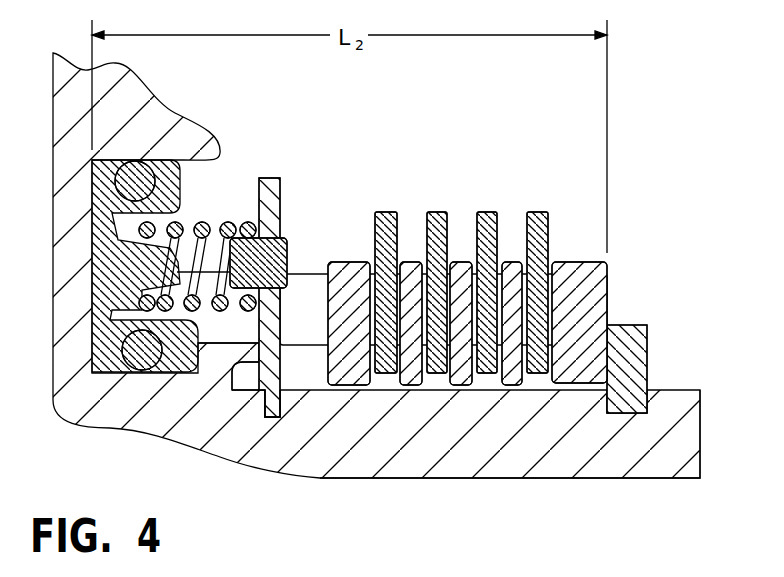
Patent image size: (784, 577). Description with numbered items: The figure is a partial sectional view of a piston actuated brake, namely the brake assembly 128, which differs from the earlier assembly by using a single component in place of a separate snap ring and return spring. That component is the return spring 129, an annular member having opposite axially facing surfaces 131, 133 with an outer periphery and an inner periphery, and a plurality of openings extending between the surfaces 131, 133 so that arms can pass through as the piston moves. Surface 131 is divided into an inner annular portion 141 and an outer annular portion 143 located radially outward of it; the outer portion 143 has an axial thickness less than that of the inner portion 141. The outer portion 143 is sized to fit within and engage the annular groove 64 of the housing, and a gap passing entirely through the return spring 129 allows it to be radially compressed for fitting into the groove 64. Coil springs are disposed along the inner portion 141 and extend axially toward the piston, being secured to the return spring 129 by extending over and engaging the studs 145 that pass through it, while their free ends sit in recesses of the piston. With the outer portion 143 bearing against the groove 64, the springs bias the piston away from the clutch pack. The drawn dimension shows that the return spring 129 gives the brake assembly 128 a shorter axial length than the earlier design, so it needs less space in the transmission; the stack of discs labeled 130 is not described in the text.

The brake assembly 128 is at (655, 125).
The return spring 129 is at (298, 194).
The seal tooth stack 130 is at (468, 196).
The axially facing surface 131 is at (258, 327).
The axially facing surface 133 is at (283, 322).
The inner annular portion 141 is at (243, 343).
The outer annular portion 143 is at (265, 403).
The stud 145 is at (273, 267).
The annular groove 64 is at (280, 403).